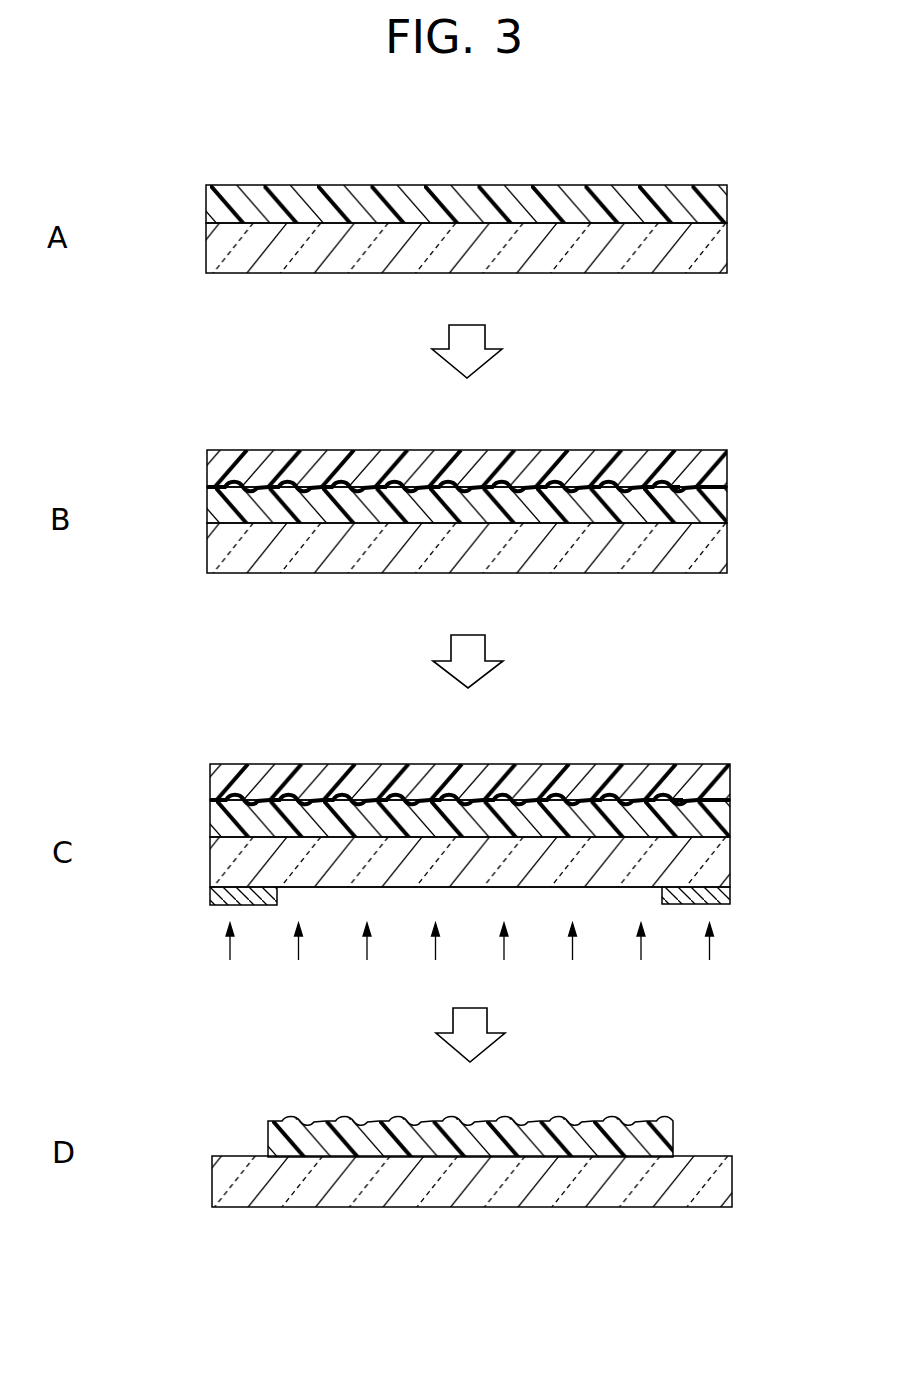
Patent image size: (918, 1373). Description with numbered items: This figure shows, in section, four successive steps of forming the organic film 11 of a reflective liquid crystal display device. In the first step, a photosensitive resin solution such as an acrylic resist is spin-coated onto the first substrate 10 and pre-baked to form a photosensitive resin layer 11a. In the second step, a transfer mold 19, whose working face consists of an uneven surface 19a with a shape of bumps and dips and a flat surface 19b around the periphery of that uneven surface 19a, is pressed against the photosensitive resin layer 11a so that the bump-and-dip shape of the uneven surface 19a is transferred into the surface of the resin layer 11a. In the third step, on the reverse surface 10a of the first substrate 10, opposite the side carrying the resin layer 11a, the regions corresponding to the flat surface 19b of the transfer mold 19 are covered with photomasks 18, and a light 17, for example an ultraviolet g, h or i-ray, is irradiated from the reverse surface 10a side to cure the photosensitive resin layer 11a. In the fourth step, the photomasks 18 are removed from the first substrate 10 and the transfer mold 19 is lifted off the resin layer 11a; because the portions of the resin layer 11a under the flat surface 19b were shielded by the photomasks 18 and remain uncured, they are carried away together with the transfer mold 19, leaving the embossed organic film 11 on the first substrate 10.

The first substrate 10 is at (712, 242).
The reverse surface of the first substrate 10a is at (330, 890).
The organic film 11 is at (668, 1128).
The photosensitive resin layer 11a is at (716, 196).
The light 17 is at (712, 948).
The photomasks 18 is at (210, 897).
The transfer mold 19 is at (712, 466).
The uneven surface 19a is at (280, 505).
The flat surface 19b is at (682, 490).